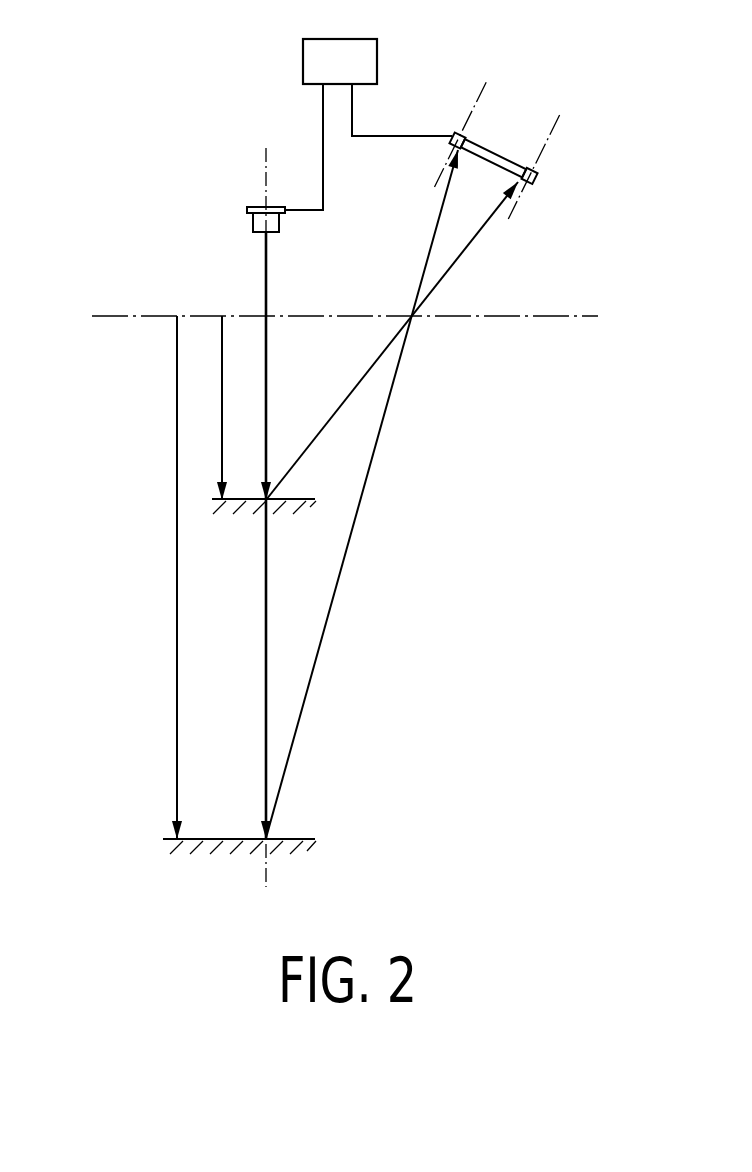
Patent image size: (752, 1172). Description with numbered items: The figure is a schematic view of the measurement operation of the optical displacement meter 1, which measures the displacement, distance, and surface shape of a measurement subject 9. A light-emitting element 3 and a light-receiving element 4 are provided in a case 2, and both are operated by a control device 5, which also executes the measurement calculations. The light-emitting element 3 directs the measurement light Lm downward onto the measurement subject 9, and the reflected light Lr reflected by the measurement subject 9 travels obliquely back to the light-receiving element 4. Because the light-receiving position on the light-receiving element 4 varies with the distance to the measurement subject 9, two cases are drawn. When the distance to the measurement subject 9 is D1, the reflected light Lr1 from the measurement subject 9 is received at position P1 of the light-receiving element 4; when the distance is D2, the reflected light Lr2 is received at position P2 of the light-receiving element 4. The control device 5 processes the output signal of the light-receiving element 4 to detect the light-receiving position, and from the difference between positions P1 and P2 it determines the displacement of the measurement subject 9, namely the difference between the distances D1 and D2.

The optical displacement meter 1 is at (104, 99).
The case 2 is at (561, 317).
The light-emitting element 3 is at (248, 212).
The light-receiving element 4 is at (540, 178).
The control device 5 is at (318, 39).
The measurement subject 9 is at (296, 500).
The measurement light Lm is at (268, 378).
The reflected light Lr1 is at (362, 378).
The reflected light Lr2 is at (378, 442).
The reflected light Lr is at (477, 397).
The distance D1 is at (211, 408).
The distance D2 is at (163, 577).
The position P1 is at (544, 151).
The position P2 is at (476, 121).